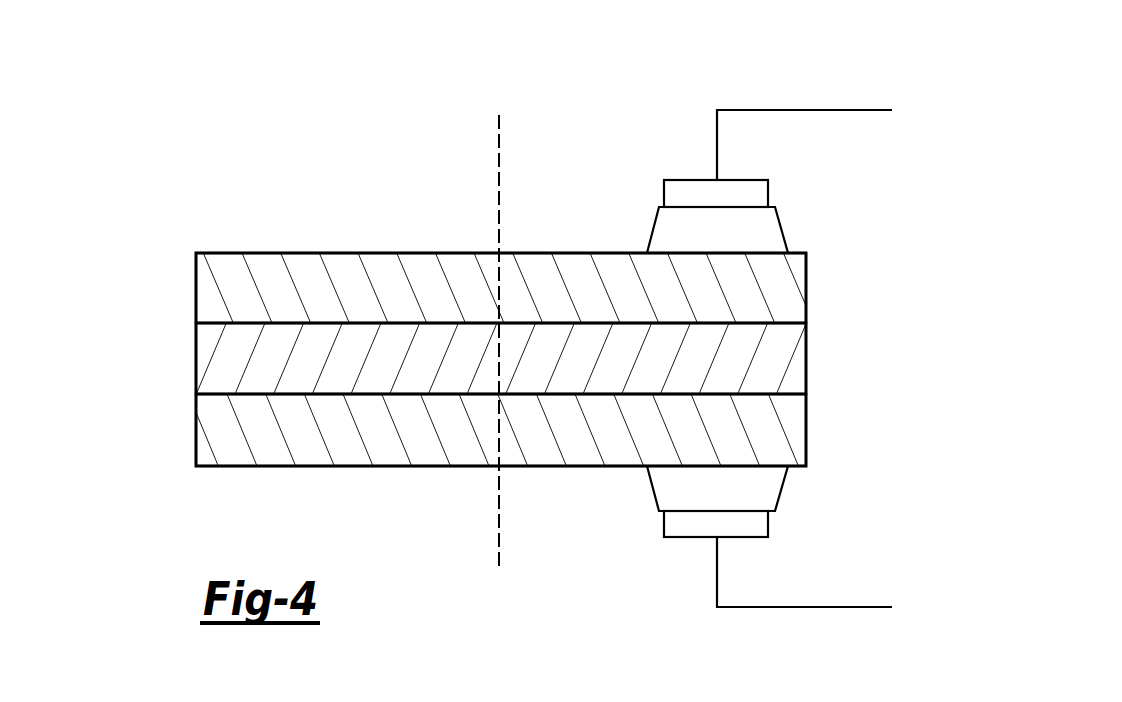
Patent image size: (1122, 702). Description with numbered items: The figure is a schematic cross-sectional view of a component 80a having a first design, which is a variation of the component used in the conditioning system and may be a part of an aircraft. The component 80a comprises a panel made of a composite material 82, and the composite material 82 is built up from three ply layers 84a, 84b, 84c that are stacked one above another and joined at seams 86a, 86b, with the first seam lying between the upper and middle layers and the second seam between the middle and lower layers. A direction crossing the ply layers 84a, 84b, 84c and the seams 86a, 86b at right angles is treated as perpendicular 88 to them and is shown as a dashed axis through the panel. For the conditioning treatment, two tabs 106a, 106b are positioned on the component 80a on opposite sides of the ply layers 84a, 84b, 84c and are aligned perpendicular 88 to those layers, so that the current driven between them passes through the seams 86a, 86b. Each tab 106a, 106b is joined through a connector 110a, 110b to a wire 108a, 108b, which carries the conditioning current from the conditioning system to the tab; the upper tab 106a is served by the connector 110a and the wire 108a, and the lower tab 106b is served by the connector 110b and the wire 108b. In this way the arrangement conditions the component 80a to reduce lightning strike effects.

The component 80a is at (290, 166).
The composite material 82 is at (100, 253).
The ply layer 84a is at (196, 290).
The ply layer 84b is at (196, 358).
The ply layer 84c is at (196, 430).
The seam 86a is at (812, 320).
The seam 86b is at (812, 392).
The perpendicular 88 is at (499, 170).
The tab 106a is at (782, 230).
The tab 106b is at (780, 488).
The wire 108a is at (805, 109).
The wire 108b is at (820, 607).
The connector 110a is at (687, 180).
The connector 110b is at (687, 537).